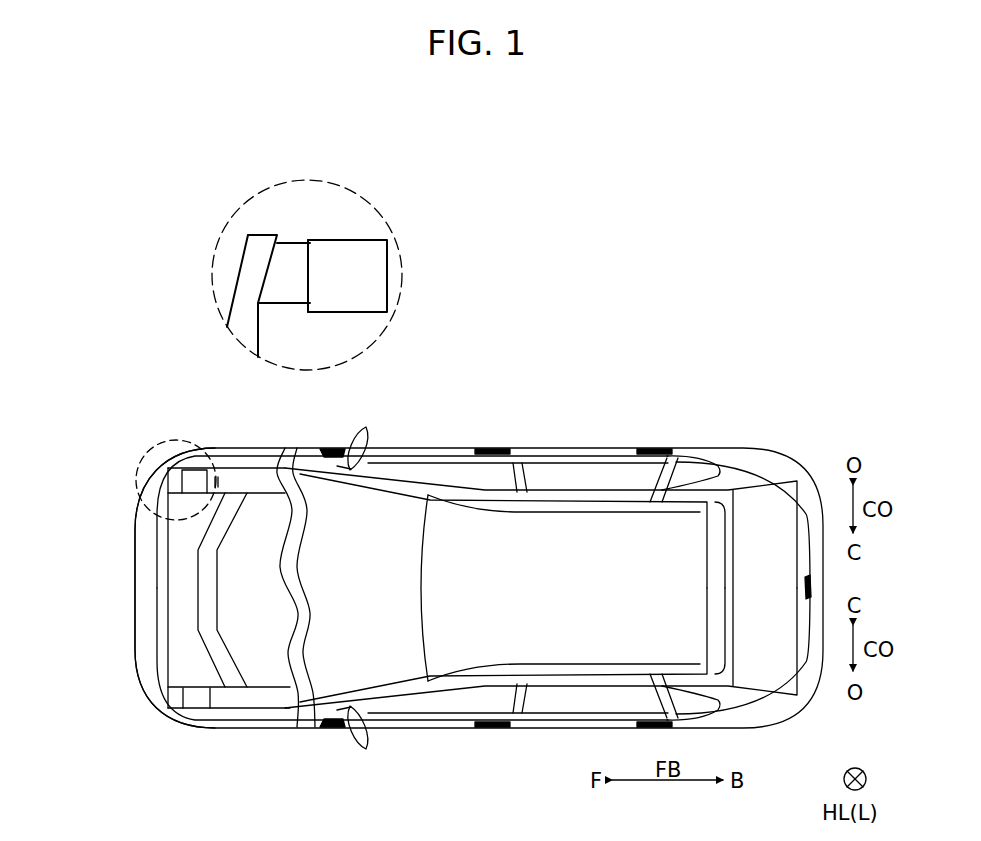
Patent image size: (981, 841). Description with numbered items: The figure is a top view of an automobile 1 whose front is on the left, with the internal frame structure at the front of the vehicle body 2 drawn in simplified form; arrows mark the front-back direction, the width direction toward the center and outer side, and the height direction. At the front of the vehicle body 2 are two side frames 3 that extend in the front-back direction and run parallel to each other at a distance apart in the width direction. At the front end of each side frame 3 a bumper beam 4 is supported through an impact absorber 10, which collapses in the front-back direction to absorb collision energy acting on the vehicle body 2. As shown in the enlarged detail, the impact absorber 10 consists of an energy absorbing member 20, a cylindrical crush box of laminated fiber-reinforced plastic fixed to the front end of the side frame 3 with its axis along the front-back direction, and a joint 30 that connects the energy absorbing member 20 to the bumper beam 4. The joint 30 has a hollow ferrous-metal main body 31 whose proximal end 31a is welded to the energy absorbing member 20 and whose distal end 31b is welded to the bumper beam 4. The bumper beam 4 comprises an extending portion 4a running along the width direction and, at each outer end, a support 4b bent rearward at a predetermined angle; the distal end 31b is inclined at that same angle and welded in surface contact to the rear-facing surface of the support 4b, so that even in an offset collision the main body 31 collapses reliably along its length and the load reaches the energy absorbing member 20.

The automobile 1 is at (746, 403).
The vehicle body 2 is at (567, 447).
The side frame 3 is at (253, 460).
The bumper beam 4 is at (142, 489).
The extending portion 4a is at (148, 499).
The support 4b is at (243, 253).
The impact absorber 10 is at (396, 222).
The energy absorbing member 20 is at (353, 313).
The joint 30 is at (254, 449).
The main body 31 is at (293, 243).
The proximal end 31a is at (334, 221).
The distal end 31b is at (250, 240).